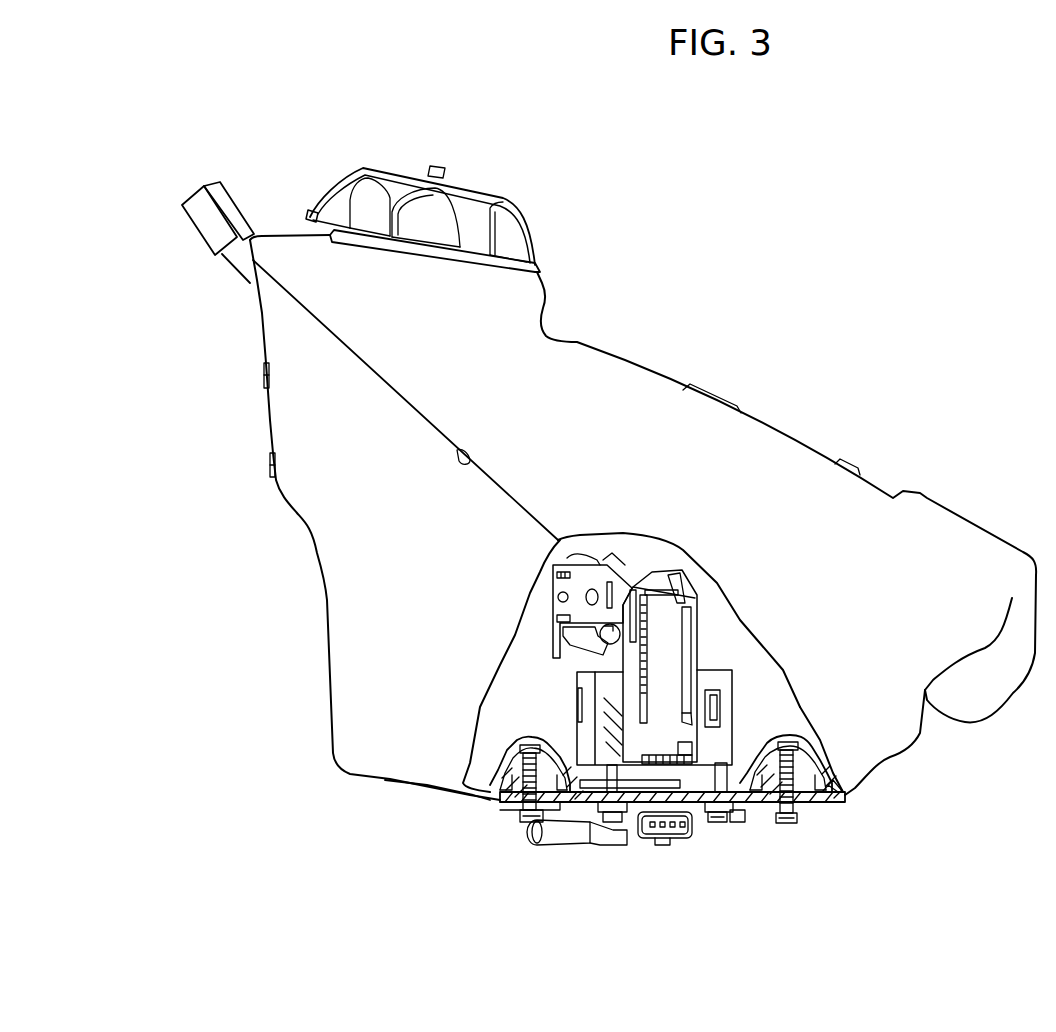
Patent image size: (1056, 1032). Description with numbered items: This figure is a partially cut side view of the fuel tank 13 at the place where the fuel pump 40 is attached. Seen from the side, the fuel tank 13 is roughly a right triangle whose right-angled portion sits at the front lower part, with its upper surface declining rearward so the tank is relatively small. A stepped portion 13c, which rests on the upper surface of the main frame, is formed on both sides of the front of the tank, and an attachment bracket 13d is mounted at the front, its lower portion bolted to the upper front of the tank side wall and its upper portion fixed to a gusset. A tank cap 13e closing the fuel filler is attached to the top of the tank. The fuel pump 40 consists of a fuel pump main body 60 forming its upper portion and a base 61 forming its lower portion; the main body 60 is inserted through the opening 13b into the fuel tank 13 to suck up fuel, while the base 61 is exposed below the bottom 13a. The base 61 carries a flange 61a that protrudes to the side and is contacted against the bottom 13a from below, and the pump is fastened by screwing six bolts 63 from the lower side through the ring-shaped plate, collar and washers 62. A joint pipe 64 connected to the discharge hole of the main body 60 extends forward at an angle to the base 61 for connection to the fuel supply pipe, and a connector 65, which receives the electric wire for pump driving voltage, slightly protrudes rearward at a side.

The fuel tank 13 is at (330, 537).
The bottom 13a is at (385, 780).
The opening 13b is at (587, 763).
The stepped portion 13c is at (468, 455).
The attachment bracket 13d is at (197, 185).
The tank cap 13e is at (513, 240).
The fuel pump 40 is at (638, 555).
The fuel pump main body 60 is at (665, 642).
The base 61 is at (623, 827).
The flange 61a is at (720, 822).
The fastening components (ring-shaped plate, collar and washers) 62 is at (813, 803).
The bolts 63 is at (787, 823).
The joint pipe 64 is at (535, 835).
The connector 65 is at (677, 835).